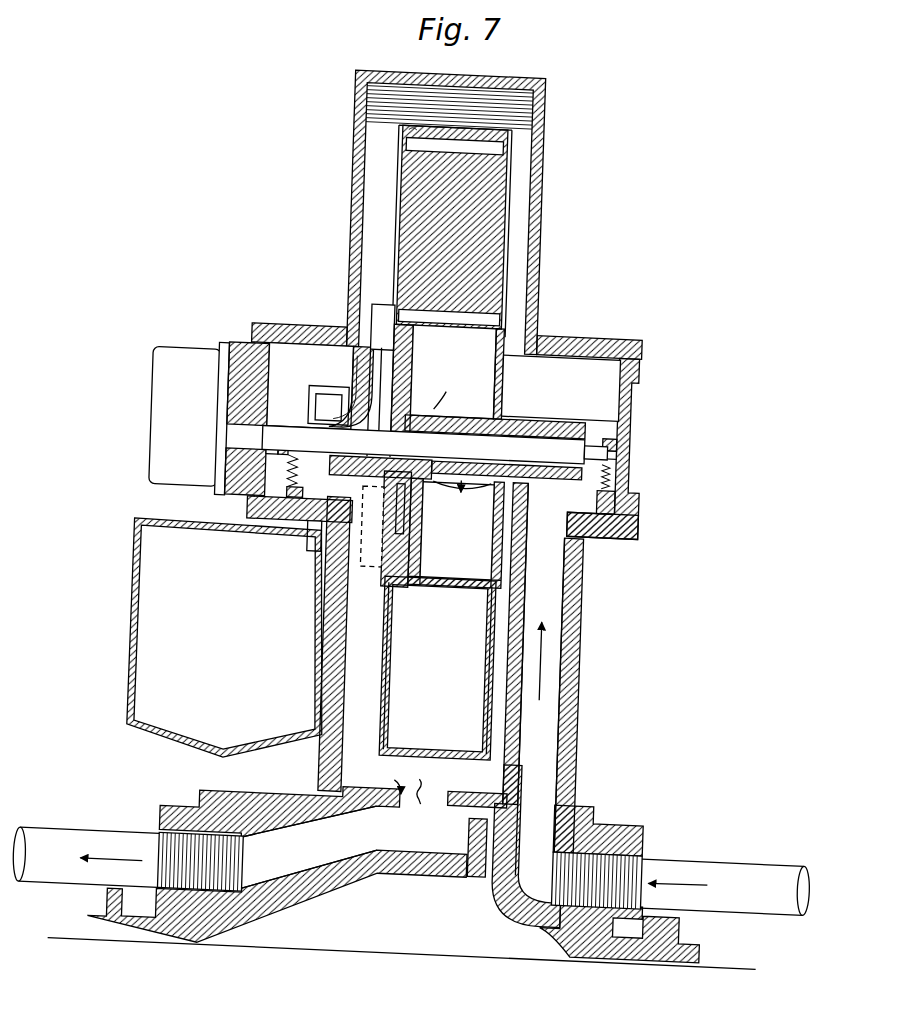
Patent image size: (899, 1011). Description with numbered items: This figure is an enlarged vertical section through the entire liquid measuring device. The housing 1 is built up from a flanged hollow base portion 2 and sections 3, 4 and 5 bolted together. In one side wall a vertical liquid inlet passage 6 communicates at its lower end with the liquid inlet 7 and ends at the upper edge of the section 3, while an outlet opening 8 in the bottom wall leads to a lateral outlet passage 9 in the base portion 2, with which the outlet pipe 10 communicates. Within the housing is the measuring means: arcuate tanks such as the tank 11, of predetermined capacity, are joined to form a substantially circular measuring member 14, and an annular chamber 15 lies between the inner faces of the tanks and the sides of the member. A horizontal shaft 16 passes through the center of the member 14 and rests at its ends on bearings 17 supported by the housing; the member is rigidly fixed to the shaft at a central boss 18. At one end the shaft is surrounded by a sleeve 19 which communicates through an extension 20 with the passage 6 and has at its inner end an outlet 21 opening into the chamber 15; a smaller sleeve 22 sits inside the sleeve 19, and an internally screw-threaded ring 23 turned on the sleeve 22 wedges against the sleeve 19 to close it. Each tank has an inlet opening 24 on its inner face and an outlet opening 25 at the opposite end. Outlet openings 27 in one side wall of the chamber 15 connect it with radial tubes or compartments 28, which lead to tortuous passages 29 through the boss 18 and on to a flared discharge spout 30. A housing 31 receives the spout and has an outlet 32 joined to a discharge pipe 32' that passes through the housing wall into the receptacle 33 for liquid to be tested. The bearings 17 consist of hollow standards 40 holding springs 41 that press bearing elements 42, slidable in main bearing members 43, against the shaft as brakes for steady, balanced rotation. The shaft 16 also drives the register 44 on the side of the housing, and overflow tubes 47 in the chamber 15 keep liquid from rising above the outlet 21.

The housing 1 is at (534, 162).
The flanged hollow base portion 2 is at (560, 945).
The section 3 is at (585, 662).
The section 4 is at (634, 400).
The section 5 is at (531, 218).
The vertical liquid inlet passage 6 is at (562, 705).
The liquid inlet 7 is at (690, 850).
The outlet opening 8 is at (449, 783).
The lateral outlet passage 9 is at (346, 862).
The outlet pipe 10 is at (86, 847).
The measuring receptacle or tank 11 is at (437, 668).
The measuring member 14 is at (533, 135).
The annular chamber 15 is at (448, 456).
The horizontal shaft 16 is at (505, 428).
The bearings 17 is at (620, 505).
The boss 18 is at (386, 528).
The sleeve 19 is at (566, 412).
The extension 20 is at (600, 531).
The outlet 21 is at (462, 504).
The sleeve 22 is at (540, 414).
The internally screw-threaded ring 23 is at (445, 391).
The inlet opening 24 is at (500, 313).
The outlet opening 25 is at (452, 227).
The outlet openings 27 is at (380, 352).
The tubes or compartments 28 is at (372, 309).
The tortuous passages 29 is at (356, 396).
The flared discharge spout 30 is at (330, 394).
The housing 31 is at (302, 394).
The outlet 32 is at (423, 450).
The discharge pipe 32' is at (298, 545).
The tank or receptacle 33 is at (140, 537).
The hollow standards 40 is at (262, 492).
The springs 41 is at (262, 478).
The bearing elements 42 is at (240, 470).
The main bearing members 43 is at (240, 462).
The register 44 is at (160, 362).
The overflow tubes 47 is at (406, 530).